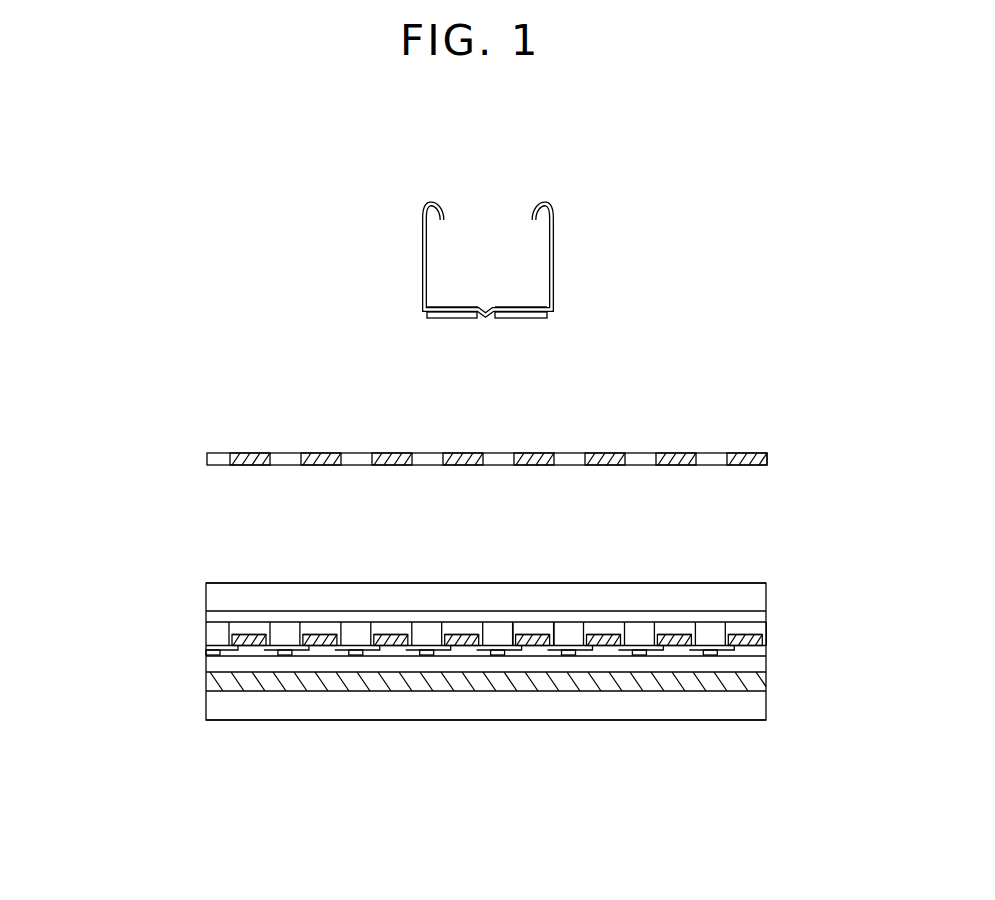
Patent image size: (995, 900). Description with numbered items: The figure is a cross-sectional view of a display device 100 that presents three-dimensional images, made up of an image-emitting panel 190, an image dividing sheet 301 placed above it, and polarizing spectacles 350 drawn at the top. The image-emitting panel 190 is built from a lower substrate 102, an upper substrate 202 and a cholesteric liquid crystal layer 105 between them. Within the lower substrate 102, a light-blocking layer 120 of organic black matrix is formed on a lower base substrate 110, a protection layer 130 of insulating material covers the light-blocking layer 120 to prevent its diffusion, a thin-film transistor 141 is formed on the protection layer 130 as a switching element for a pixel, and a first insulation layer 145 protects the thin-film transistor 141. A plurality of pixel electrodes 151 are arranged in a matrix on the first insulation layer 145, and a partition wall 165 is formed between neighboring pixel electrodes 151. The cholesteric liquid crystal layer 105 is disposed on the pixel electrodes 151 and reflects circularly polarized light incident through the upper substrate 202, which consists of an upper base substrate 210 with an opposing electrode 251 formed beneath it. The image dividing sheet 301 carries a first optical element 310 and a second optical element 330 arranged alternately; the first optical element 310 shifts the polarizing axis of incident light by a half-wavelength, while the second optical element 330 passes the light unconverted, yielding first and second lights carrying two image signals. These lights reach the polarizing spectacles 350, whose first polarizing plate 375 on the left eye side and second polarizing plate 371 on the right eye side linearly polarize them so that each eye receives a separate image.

The display device 100 is at (461, 588).
The lower substrate 102 is at (500, 705).
The cholesteric liquid crystal layer 105 is at (532, 630).
The lower base substrate 110 is at (528, 731).
The light-blocking layer 120 is at (758, 685).
The protection layer 130 is at (758, 668).
The thin-film transistor 141 is at (758, 642).
The first insulation layer 145 is at (758, 656).
The pixel electrode 151 is at (758, 629).
The partition wall 165 is at (715, 640).
The image-emitting panel 190 is at (527, 665).
The upper substrate 202 is at (420, 603).
The upper base substrate 210 is at (212, 595).
The opposing electrode 251 is at (212, 614).
The image dividing sheet 301 is at (425, 447).
The first optical element 310 is at (243, 453).
The second optical element 330 is at (212, 460).
The polarizing spectacles 350 is at (421, 288).
The second polarizing plate 371 is at (438, 318).
The first polarizing plate 375 is at (512, 318).